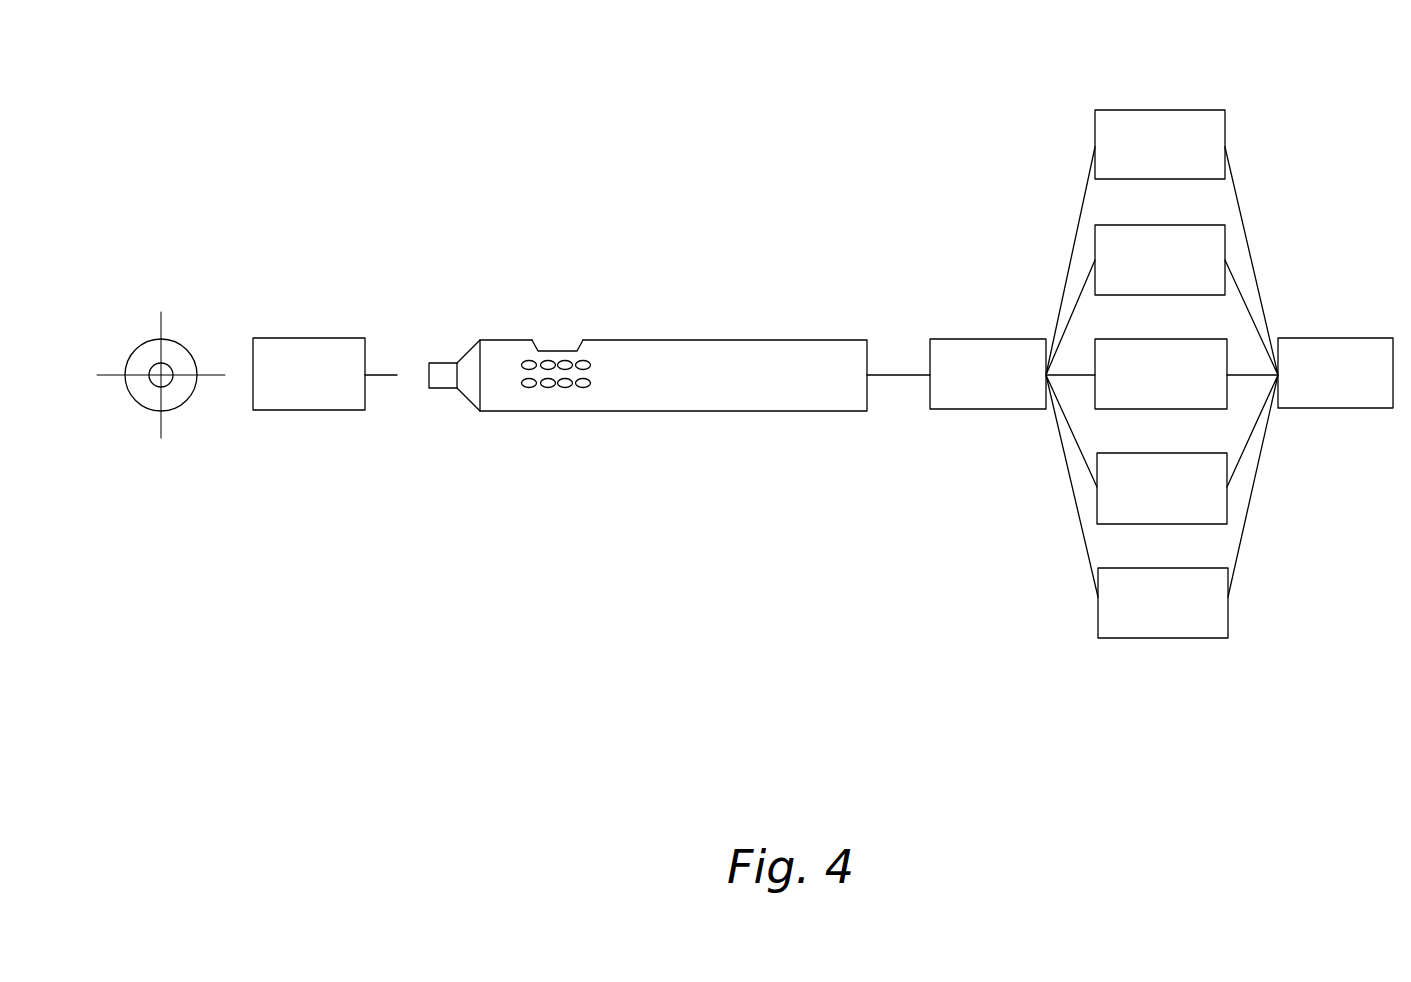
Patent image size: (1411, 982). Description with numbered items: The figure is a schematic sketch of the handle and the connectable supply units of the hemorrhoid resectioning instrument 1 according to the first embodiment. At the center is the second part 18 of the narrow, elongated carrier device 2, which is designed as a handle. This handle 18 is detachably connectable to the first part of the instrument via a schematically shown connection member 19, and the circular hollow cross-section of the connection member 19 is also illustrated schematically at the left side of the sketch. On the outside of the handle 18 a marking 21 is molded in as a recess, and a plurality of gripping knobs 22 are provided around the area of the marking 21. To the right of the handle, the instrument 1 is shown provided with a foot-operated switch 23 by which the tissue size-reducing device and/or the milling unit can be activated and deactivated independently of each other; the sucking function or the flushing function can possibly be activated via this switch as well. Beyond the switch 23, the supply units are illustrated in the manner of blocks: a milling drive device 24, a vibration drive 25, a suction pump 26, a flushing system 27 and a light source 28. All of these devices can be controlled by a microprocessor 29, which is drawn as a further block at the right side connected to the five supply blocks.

The connection member 19 is at (172, 355).
The hemorrhoid resectioning instrument 1 is at (679, 340).
The second part (handle) 18 is at (679, 324).
The carrier device 2 is at (780, 365).
The marking 21 is at (557, 350).
The gripping knobs 22 is at (529, 388).
The foot-operated switch 23 is at (983, 365).
The milling drive device 24 is at (1168, 135).
The vibration drive 25 is at (1162, 258).
The suction pump 26 is at (1166, 362).
The flushing system 27 is at (1165, 482).
The light source 28 is at (1163, 590).
The microprocessor 29 is at (1335, 360).